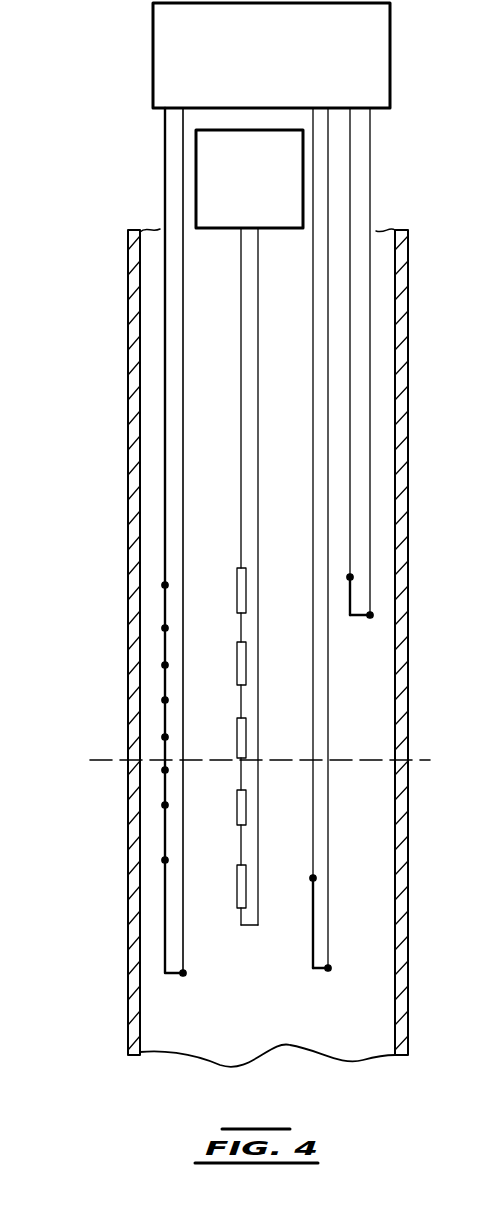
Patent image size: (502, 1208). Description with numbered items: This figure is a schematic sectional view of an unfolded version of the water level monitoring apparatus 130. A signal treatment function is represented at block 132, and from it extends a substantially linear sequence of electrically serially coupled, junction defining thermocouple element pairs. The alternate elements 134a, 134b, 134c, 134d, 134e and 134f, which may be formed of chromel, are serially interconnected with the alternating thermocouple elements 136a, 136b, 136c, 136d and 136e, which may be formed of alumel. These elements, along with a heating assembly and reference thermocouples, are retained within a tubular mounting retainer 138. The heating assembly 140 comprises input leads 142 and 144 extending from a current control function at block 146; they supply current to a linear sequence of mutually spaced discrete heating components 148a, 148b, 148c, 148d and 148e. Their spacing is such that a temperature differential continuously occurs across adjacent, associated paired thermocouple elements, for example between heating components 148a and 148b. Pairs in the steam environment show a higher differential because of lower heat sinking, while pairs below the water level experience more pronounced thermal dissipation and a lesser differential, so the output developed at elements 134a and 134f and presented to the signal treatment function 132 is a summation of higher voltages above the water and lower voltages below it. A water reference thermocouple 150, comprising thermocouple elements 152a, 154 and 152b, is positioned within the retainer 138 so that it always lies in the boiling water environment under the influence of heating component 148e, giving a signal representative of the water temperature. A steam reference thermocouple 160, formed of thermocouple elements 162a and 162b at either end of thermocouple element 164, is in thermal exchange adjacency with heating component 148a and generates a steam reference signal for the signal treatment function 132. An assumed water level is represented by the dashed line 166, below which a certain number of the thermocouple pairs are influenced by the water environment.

The monitoring apparatus 130 is at (122, 277).
The signal treatment function 132 is at (153, 58).
The thermocouple element 134a is at (165, 540).
The thermocouple element 134b is at (165, 650).
The thermocouple element 134c is at (165, 718).
The thermocouple element 134d is at (165, 793).
The thermocouple element 134e is at (165, 868).
The thermocouple element 134f is at (185, 977).
The thermocouple element 136a is at (165, 607).
The thermocouple element 136b is at (165, 685).
The thermocouple element 136c is at (165, 748).
The thermocouple element 136d is at (165, 820).
The thermocouple element 136e is at (165, 935).
The tubular mounting retainer 138 is at (133, 365).
The heating assembly 140 is at (243, 934).
The input lead 142 is at (241, 417).
The input lead 144 is at (258, 418).
The current control function 146 is at (217, 228).
The heating component 148a is at (237, 592).
The heating component 148b is at (237, 666).
The heating component 148c is at (237, 737).
The heating component 148d is at (237, 808).
The heating component 148e is at (237, 888).
The water reference thermocouple 150 is at (320, 980).
The thermocouple element 152a is at (313, 725).
The thermocouple element 152b is at (328, 805).
The thermocouple element 154 is at (310, 967).
The steam reference thermocouple 160 is at (346, 660).
The thermocouple element 162a is at (350, 388).
The thermocouple element 162b is at (370, 420).
The thermocouple element 164 is at (350, 618).
The water level 166 is at (92, 762).